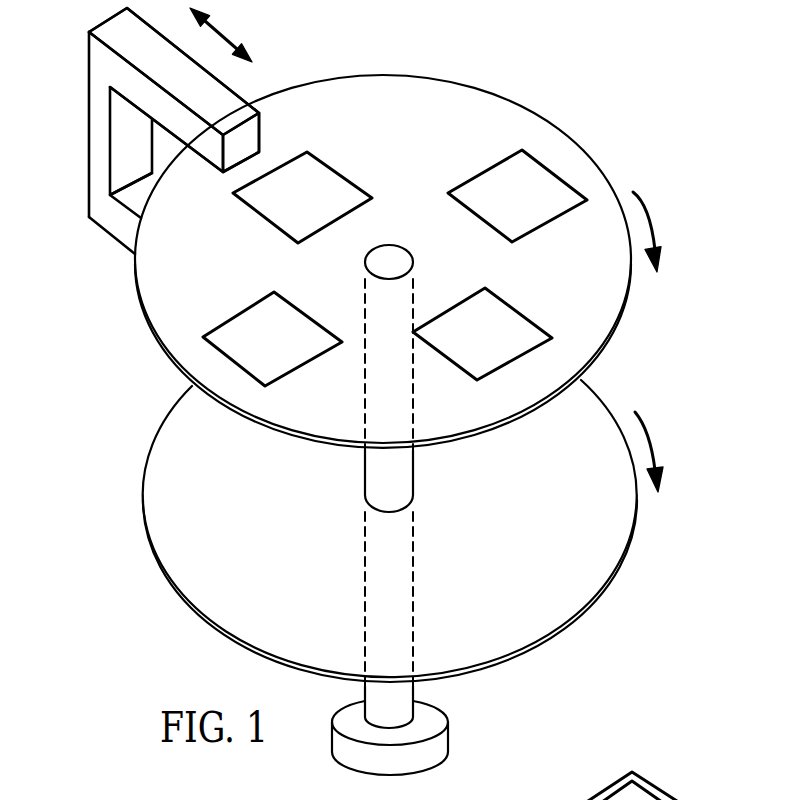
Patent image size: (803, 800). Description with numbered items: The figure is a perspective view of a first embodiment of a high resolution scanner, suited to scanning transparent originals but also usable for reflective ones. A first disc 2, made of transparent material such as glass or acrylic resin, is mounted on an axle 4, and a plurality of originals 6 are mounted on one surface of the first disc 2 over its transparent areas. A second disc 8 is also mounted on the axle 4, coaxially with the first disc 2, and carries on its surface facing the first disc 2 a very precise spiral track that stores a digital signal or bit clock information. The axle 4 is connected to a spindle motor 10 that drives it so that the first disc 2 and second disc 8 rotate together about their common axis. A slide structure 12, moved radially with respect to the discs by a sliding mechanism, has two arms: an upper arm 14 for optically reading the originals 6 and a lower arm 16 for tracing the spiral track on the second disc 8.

The first disc 2 is at (617, 190).
The axle 4 is at (365, 465).
The originals 6 is at (292, 317).
The second disc 8 is at (592, 393).
The spindle motor 10 is at (448, 732).
The slide structure 12 is at (168, 149).
The upper arm 14 is at (233, 103).
The lower arm 16 is at (123, 225).